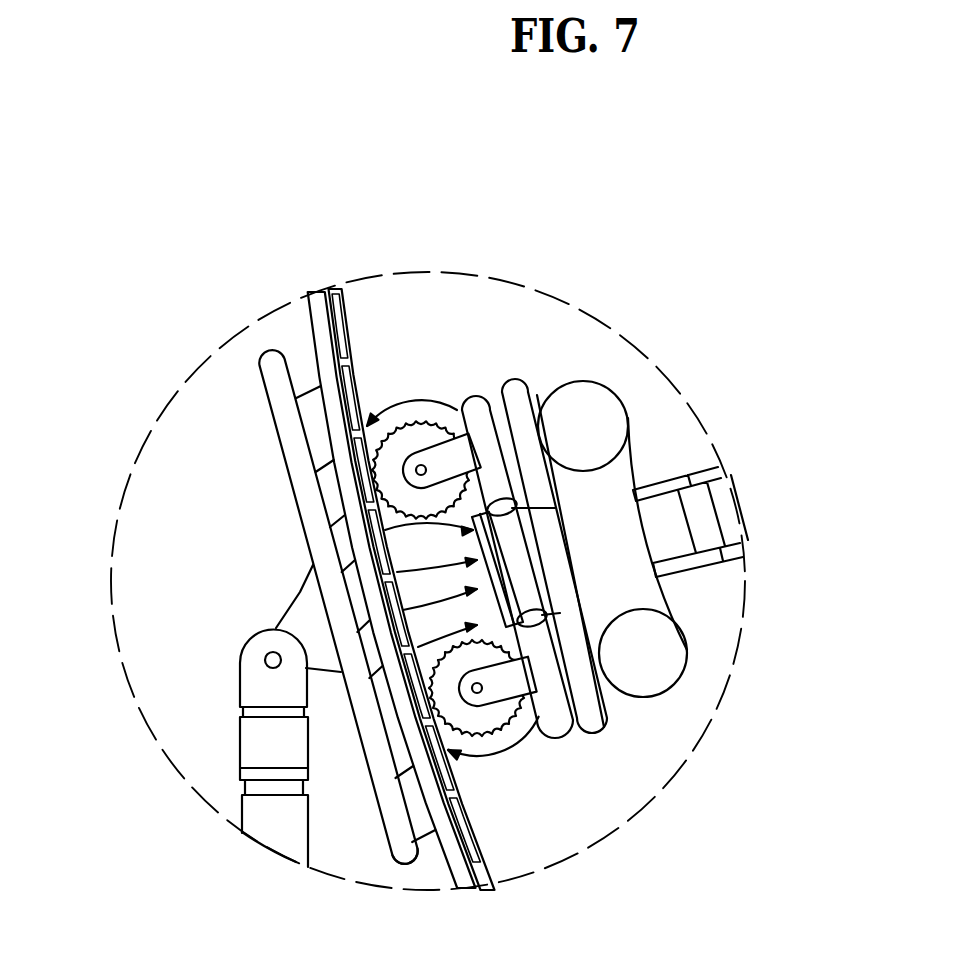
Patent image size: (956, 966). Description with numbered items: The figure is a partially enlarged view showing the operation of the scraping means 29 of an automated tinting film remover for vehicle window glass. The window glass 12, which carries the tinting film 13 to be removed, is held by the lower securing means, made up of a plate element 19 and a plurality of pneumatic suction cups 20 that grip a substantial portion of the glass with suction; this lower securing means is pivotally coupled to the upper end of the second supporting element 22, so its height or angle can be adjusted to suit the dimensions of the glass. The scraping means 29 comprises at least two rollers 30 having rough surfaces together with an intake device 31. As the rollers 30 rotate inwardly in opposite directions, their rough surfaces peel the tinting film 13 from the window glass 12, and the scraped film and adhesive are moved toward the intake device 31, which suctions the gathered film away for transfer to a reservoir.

The window glass 12 is at (310, 305).
The tinting film 13 is at (345, 307).
The plate element 19 is at (395, 848).
The pneumatic suction cups 20 is at (327, 482).
The second supporting element 22 is at (253, 745).
The scraping means 29 is at (635, 715).
The rollers 30 is at (411, 428).
The intake device 31 is at (598, 493).